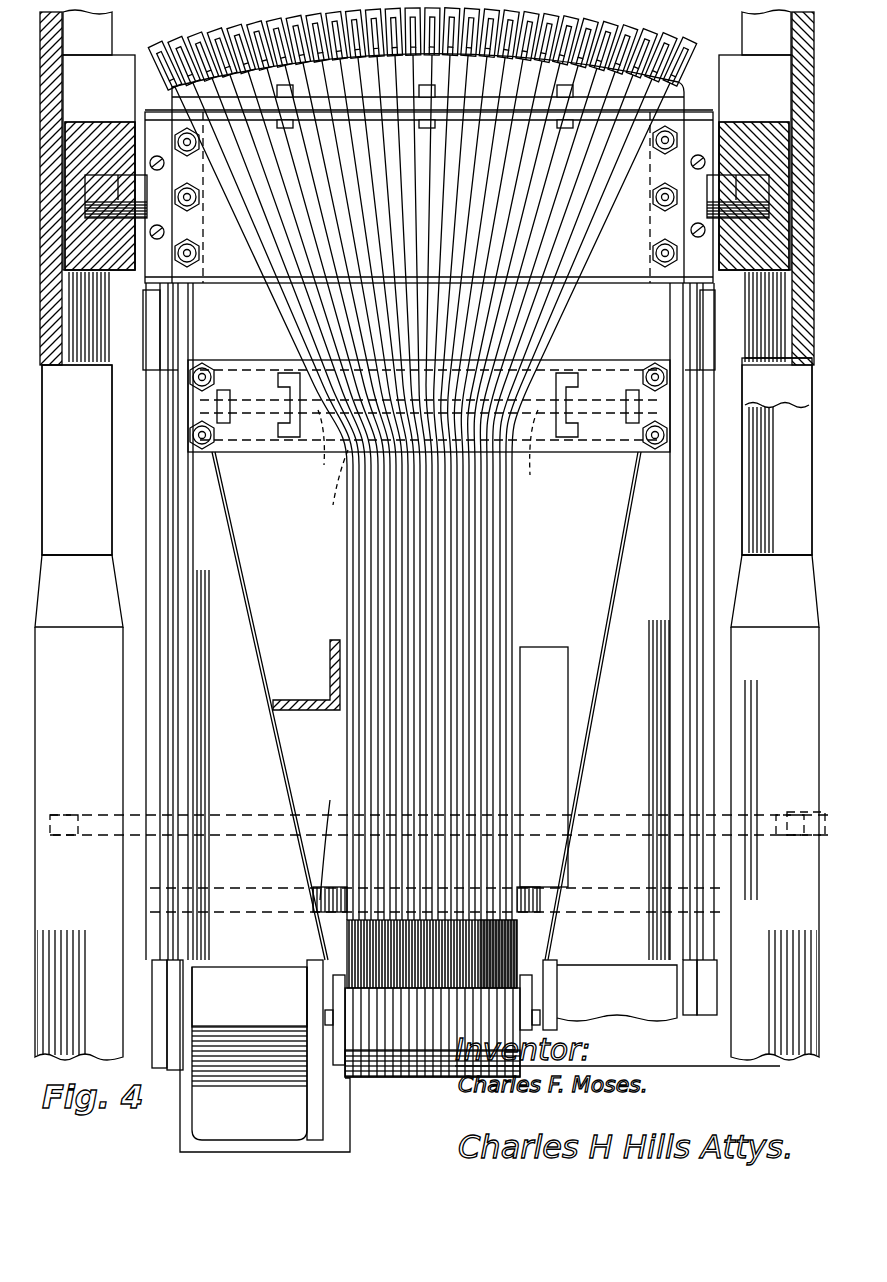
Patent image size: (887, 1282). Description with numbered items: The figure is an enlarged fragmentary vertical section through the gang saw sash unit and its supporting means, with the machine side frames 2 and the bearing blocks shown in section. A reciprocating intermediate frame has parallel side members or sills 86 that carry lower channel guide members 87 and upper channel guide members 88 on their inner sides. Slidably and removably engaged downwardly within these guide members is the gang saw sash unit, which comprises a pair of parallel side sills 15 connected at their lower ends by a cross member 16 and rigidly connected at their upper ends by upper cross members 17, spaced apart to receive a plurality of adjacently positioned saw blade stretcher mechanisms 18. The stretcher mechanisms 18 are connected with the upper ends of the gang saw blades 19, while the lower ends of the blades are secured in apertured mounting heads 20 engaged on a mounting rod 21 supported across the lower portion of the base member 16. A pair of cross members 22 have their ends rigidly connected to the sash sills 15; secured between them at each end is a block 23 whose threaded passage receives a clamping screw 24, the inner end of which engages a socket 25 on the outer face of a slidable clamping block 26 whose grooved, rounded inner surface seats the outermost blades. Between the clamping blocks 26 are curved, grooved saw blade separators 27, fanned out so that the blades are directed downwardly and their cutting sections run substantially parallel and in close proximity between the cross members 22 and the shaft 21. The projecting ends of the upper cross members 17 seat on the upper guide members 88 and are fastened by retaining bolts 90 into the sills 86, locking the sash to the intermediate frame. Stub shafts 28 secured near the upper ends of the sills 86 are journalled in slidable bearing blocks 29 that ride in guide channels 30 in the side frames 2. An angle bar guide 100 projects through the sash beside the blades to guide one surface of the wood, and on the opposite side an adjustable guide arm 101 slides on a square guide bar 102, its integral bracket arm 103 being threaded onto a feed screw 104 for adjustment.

The machine side frame 2 is at (427, 535).
The side sill 15 is at (190, 810).
The cross member 16 is at (270, 1118).
The upper cross member 17 is at (604, 262).
The saw blade stretcher mechanism 18 is at (250, 32).
The gang saw blade 19 is at (430, 638).
The mounting head 20 is at (495, 960).
The mounting rod 21 is at (530, 1000).
The cross member 22 is at (540, 452).
The block 23 is at (245, 340).
The clamping screw 24 is at (250, 400).
The socket 25 is at (295, 435).
The clamping block 26 is at (429, 467).
The saw blade separator 27 is at (420, 415).
The stub shaft 28 is at (130, 180).
The bearing block 29 is at (115, 270).
The guide channel 30 is at (148, 373).
The side member 86 is at (160, 693).
The lower channel guide member 87 is at (178, 1003).
The upper channel guide member 88 is at (160, 333).
The retaining bolt 90 is at (165, 167).
The angle bar guide 100 is at (330, 656).
The adjustable material guide arm 101 is at (545, 655).
The square guide bar 102 is at (725, 852).
The bracket arm 103 is at (542, 898).
The feed screw 104 is at (313, 839).